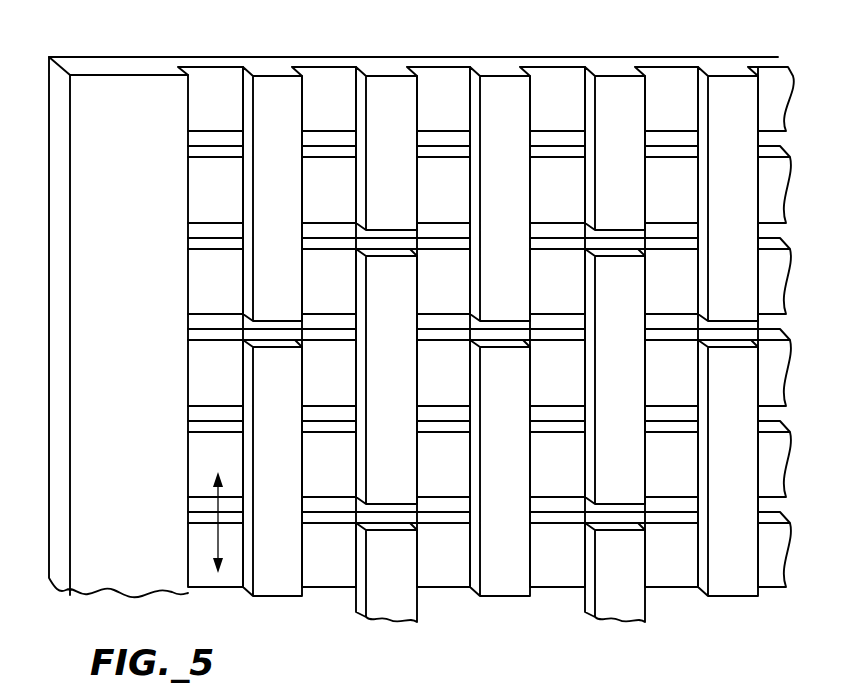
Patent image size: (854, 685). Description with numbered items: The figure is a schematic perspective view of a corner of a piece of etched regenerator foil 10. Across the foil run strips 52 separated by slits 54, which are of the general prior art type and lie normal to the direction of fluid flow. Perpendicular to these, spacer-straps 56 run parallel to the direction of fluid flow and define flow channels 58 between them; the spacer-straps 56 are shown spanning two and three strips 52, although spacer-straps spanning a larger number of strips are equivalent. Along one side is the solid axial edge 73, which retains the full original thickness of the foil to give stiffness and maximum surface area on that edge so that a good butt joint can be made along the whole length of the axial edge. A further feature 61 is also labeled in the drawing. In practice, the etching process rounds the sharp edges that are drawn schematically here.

The etched regenerator foil 10 is at (122, 33).
The strips 52 is at (344, 142).
The slits 54 is at (458, 228).
The spacer-straps 56 is at (530, 185).
The flow channels 58 is at (230, 573).
The top surface 61 is at (500, 57).
The solid axial edge 73 is at (144, 333).